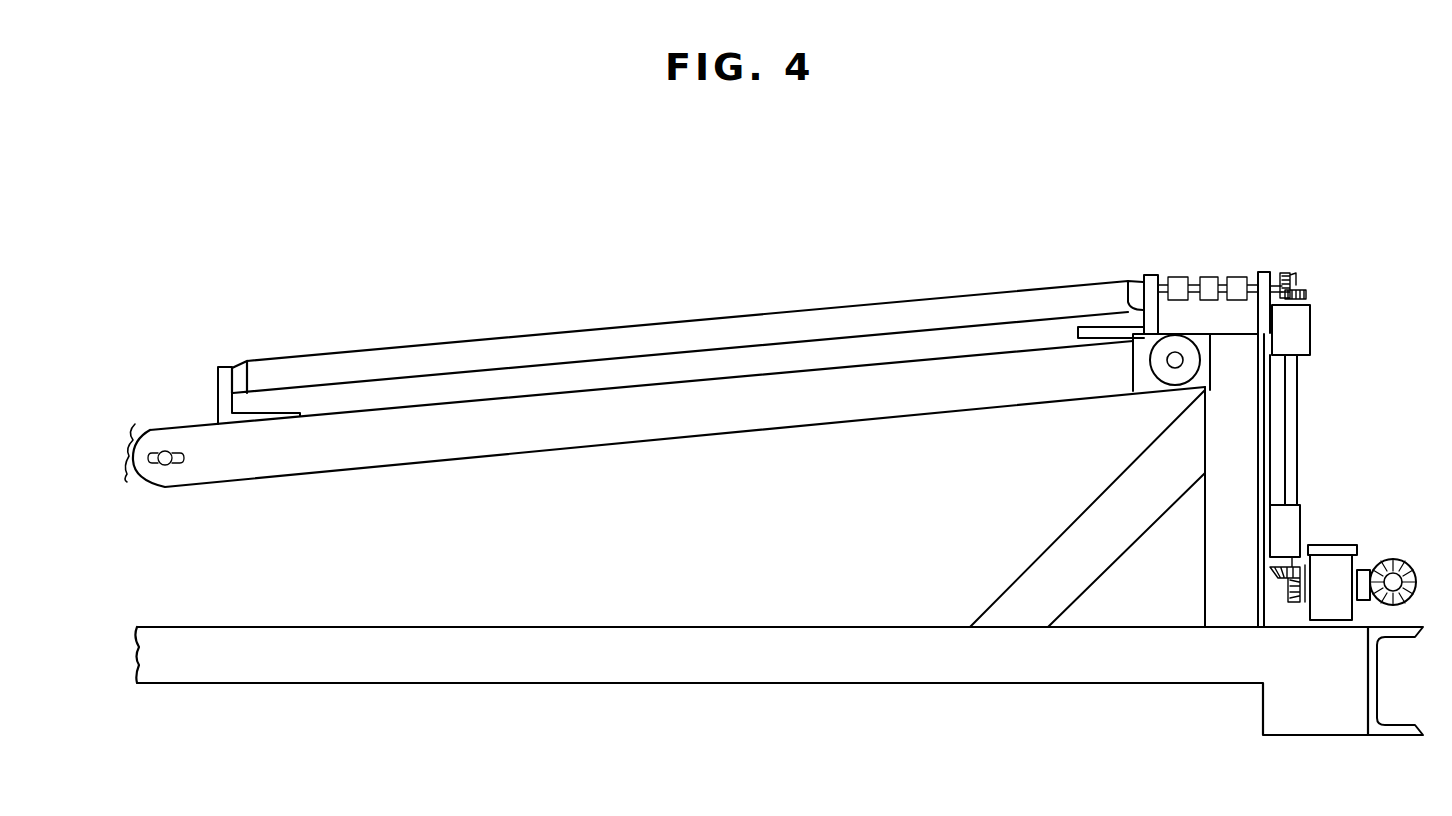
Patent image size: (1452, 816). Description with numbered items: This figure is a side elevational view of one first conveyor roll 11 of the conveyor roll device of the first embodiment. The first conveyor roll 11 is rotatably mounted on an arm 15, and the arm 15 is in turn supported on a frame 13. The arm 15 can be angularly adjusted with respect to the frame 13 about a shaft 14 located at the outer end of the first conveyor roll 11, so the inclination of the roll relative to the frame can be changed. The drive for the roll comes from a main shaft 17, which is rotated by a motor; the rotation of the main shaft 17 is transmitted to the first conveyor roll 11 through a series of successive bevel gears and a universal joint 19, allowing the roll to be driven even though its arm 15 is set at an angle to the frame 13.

The first conveyor roll 11 is at (712, 325).
The frame 13 is at (800, 673).
The shaft 14 is at (1168, 367).
The arm 15 is at (796, 415).
The main shaft 17 is at (1404, 607).
The universal joint 19 is at (1217, 280).